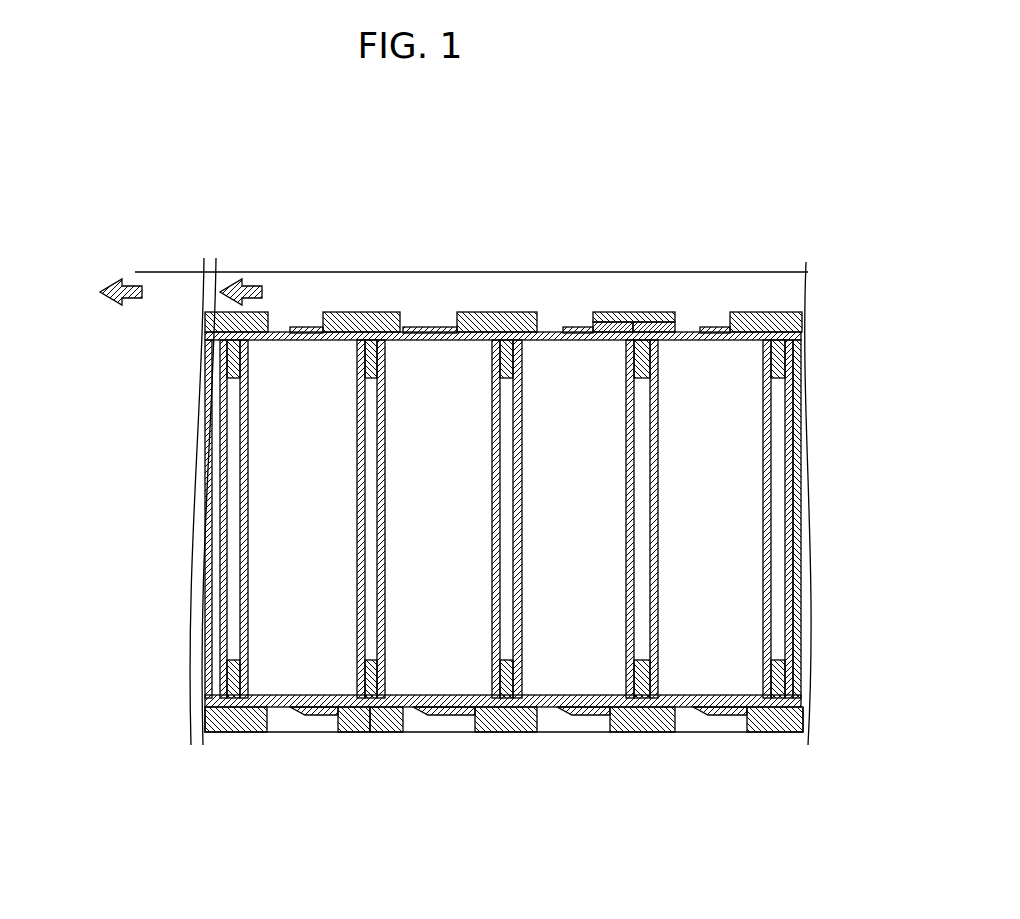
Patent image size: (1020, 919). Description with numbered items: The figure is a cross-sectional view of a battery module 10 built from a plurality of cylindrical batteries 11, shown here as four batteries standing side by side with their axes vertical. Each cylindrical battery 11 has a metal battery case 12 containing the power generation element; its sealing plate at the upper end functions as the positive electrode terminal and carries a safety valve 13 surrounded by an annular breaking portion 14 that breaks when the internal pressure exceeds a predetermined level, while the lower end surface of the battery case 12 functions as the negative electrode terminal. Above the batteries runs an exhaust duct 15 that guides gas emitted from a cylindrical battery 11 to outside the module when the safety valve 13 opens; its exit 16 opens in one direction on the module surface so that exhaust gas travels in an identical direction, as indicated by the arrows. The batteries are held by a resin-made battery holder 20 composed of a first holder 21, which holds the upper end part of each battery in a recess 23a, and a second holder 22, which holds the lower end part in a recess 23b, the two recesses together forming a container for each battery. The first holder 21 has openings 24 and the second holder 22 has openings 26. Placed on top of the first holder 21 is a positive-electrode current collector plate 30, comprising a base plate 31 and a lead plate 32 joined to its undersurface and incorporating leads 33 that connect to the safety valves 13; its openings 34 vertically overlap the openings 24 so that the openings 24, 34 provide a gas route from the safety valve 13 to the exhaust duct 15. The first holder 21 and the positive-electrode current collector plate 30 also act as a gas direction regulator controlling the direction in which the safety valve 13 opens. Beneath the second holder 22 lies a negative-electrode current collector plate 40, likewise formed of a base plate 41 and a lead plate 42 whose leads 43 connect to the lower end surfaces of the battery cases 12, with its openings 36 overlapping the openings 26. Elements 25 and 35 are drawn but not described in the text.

The battery module 10 is at (783, 141).
The cylindrical battery 11 is at (287, 517).
The battery case 12 is at (423, 710).
The safety valve 13 is at (443, 335).
The annular breaking portion 14 is at (420, 330).
The exhaust duct 15 is at (511, 290).
The exit 16 is at (143, 270).
The battery holder 20 is at (88, 432).
The first holder 21 is at (277, 343).
The second holder 22 is at (280, 690).
The recess 23a is at (262, 330).
The recess 23b is at (277, 712).
The opening 24 is at (690, 330).
The insulating sheet 25 is at (310, 330).
The opening 26 is at (697, 707).
The positive-electrode current collector plate 30 is at (675, 193).
The base plate 31 is at (626, 335).
The lead plate 32 is at (670, 330).
The lead 33 is at (570, 323).
The opening 34 is at (735, 315).
The heat conducting member 35 is at (327, 313).
The opening 36 is at (753, 713).
The negative-electrode current collector plate 40 is at (398, 836).
The base plate 41 is at (347, 710).
The lead plate 42 is at (377, 710).
The lead 43 is at (317, 707).